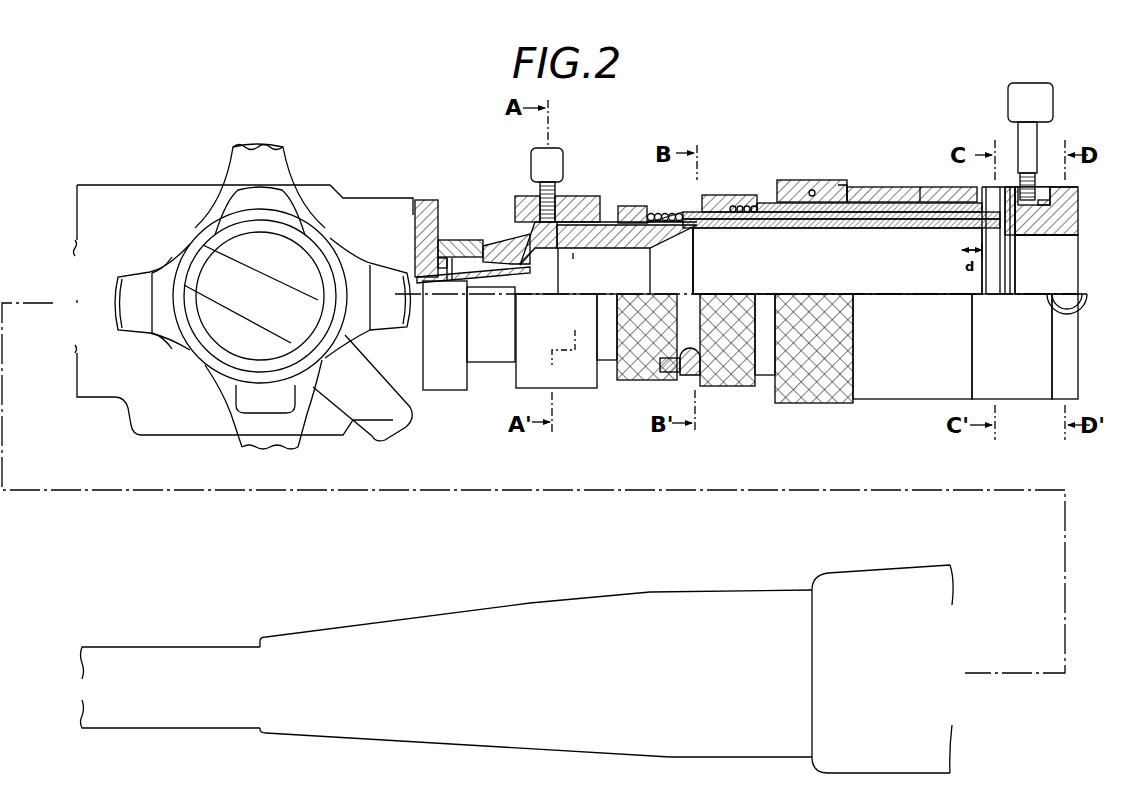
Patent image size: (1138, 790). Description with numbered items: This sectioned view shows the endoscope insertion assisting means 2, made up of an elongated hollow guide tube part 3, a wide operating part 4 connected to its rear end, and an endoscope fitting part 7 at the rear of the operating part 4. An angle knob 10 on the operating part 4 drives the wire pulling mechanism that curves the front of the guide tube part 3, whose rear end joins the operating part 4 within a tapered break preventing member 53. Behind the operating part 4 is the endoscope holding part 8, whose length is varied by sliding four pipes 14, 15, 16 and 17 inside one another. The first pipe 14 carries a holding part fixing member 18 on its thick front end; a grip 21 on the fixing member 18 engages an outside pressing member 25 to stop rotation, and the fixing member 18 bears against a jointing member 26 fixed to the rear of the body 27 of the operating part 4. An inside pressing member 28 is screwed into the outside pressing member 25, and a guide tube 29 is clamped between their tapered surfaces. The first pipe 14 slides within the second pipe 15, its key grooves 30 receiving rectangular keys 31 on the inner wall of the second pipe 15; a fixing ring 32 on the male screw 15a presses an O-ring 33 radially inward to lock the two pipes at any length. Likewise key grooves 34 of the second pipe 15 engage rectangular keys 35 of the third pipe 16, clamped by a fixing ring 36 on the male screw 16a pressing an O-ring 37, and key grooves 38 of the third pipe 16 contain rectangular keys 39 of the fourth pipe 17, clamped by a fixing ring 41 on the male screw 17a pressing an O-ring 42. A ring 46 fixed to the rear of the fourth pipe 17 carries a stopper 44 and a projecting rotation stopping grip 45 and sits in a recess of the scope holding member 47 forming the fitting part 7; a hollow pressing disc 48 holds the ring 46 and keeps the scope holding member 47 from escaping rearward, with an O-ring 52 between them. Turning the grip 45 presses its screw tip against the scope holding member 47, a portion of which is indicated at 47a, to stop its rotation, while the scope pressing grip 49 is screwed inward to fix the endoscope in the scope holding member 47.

The endoscope insertion assisting means 2 is at (692, 117).
The guide tube part 3 is at (147, 645).
The operating part 4 is at (132, 182).
The endoscope fitting part 7 is at (1082, 358).
The endoscope holding part 8 is at (785, 158).
The angle knob 10 is at (258, 146).
The first pipe 14 is at (605, 224).
The second pipe 15 is at (656, 212).
The male screw 15a is at (670, 212).
The third pipe 16 is at (905, 209).
The male screw 16a is at (746, 205).
The fourth pipe 17 is at (880, 392).
The male screw 17a is at (838, 188).
The holding part fixing member 18 is at (520, 198).
The grip 21 is at (556, 158).
The outside pressing member 25 is at (455, 246).
The jointing member 26 is at (493, 244).
The body 27 is at (380, 208).
The inside pressing member 28 is at (503, 284).
The guide tube 29 is at (437, 284).
The key grooves 30 is at (940, 228).
The rectangular keys 31 is at (727, 407).
The fixing ring 32 is at (630, 380).
The O-ring 33 is at (632, 206).
The key grooves 34 is at (950, 228).
The rectangular keys 35 is at (837, 261).
The fixing ring 36 is at (735, 280).
The O-ring 37 is at (727, 195).
The key grooves 38 is at (940, 198).
The rectangular keys 39 is at (878, 195).
The fixing ring 41 is at (806, 395).
The O-ring 42 is at (812, 190).
The stopper 44 is at (1010, 187).
The rotation stopping grip 45 is at (1030, 100).
The ring 46 is at (1076, 190).
The scope holding member 47 is at (1062, 205).
The lower face 47a is at (1068, 237).
The hollow pressing disc 48 is at (1016, 237).
The scope pressing grip 49 is at (1078, 299).
The O-ring 52 is at (1060, 212).
The tapered break preventing member 53 is at (531, 602).